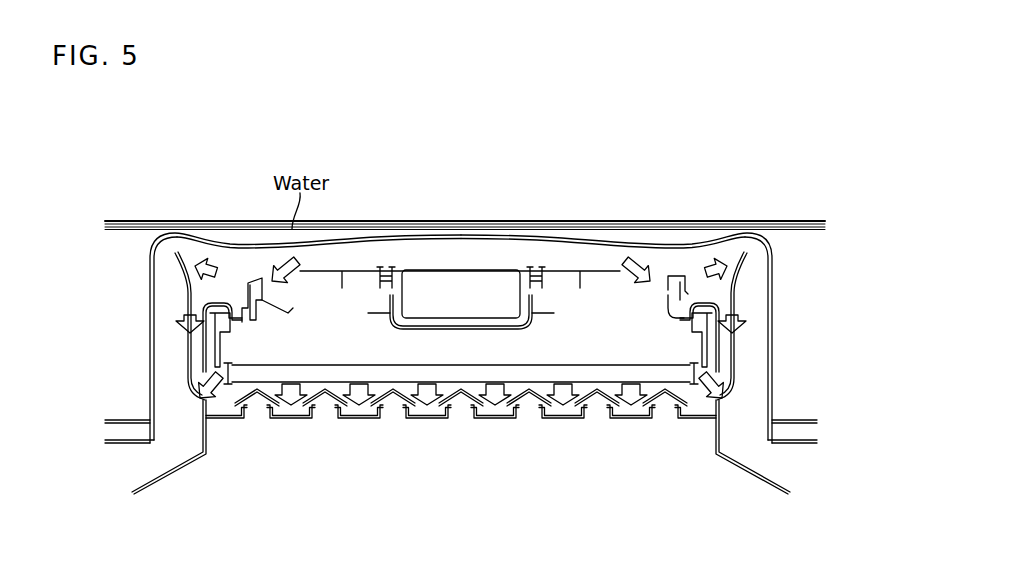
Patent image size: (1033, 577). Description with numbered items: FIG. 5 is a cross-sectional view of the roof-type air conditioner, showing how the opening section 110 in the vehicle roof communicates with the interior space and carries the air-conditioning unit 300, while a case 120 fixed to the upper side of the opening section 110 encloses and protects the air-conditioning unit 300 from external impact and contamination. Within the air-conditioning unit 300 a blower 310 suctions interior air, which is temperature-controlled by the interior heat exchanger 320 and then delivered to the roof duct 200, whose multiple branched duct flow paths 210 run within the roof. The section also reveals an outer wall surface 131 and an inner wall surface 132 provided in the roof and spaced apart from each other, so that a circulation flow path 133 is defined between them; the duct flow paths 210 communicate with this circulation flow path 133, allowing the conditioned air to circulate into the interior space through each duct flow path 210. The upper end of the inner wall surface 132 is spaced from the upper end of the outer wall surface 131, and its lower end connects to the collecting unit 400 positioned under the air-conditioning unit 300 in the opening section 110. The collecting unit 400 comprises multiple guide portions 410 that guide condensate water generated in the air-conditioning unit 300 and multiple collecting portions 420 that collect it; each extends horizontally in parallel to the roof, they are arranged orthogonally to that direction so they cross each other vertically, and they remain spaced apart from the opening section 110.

The opening section 110 is at (461, 458).
The case 120 is at (758, 229).
The outer wall surface 131 is at (152, 333).
The inner wall surface 132 is at (188, 356).
The circulation flow path 133 is at (170, 300).
The roof duct 200 is at (163, 478).
The duct flow paths 210 is at (137, 461).
The air-conditioning unit 300 is at (460, 227).
The blower 310 is at (453, 288).
The interior heat exchanger 320 is at (553, 373).
The collecting unit 400 is at (461, 461).
The guide portions 410 is at (660, 402).
The collecting portions 420 is at (635, 492).